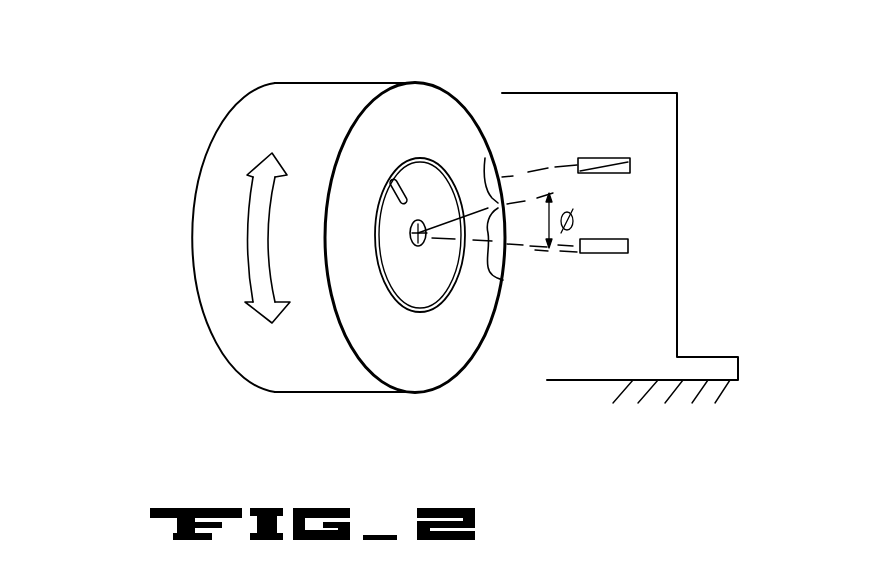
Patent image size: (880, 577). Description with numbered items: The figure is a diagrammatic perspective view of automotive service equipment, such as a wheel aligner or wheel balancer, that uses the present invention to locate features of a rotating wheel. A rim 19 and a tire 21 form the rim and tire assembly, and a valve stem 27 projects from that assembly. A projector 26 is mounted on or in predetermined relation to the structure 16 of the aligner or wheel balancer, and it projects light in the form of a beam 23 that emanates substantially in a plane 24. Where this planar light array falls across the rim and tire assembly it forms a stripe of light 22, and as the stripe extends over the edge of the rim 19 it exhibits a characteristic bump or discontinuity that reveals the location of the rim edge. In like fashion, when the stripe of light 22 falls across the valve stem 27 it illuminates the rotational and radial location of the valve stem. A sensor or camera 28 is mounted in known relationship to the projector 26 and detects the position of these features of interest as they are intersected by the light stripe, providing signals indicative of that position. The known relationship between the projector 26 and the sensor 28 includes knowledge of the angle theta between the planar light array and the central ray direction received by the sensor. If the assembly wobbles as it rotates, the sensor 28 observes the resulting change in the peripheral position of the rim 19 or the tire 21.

The structure 16 is at (677, 310).
The rim 19 is at (430, 311).
The tire 21 is at (188, 217).
The stripe of light 22 is at (485, 158).
The beam 23 is at (503, 280).
The plane 24 is at (553, 172).
The projector 26 is at (605, 158).
The valve stem 27 is at (400, 180).
The sensor or camera 28 is at (598, 253).